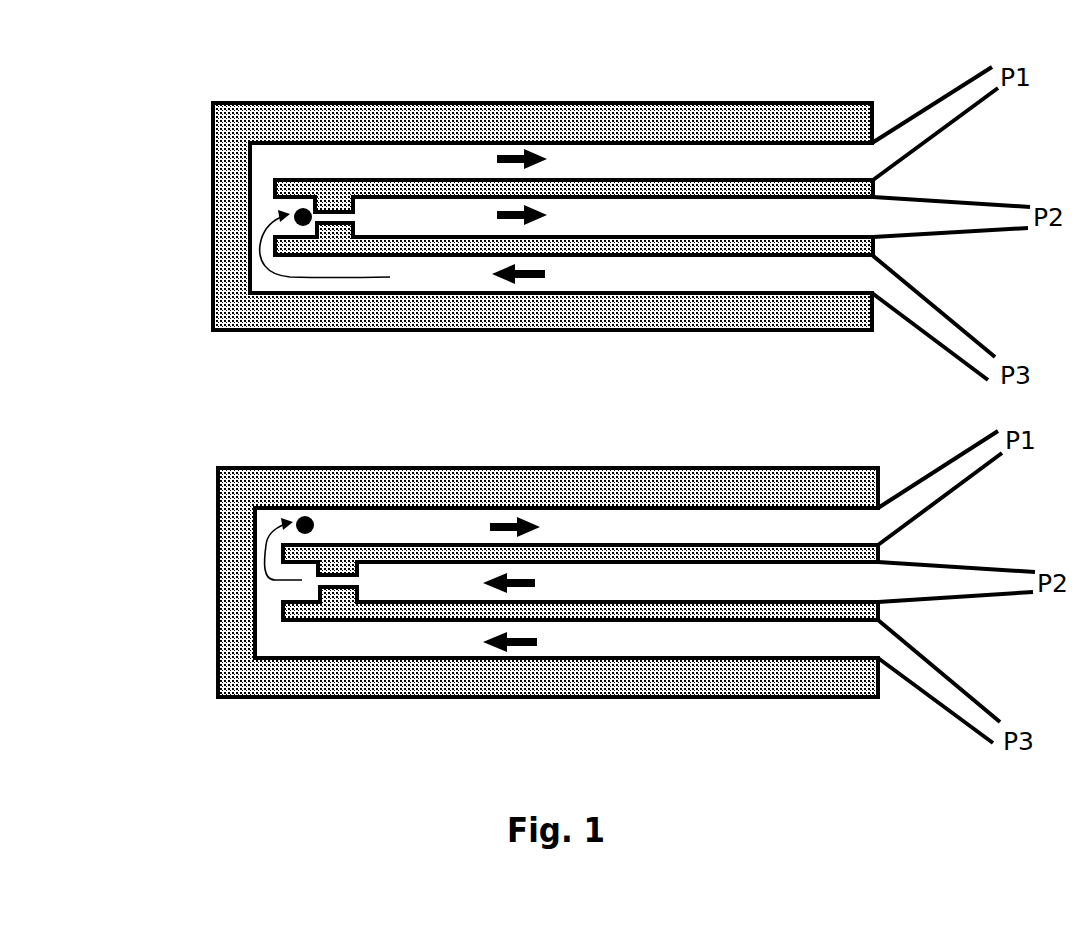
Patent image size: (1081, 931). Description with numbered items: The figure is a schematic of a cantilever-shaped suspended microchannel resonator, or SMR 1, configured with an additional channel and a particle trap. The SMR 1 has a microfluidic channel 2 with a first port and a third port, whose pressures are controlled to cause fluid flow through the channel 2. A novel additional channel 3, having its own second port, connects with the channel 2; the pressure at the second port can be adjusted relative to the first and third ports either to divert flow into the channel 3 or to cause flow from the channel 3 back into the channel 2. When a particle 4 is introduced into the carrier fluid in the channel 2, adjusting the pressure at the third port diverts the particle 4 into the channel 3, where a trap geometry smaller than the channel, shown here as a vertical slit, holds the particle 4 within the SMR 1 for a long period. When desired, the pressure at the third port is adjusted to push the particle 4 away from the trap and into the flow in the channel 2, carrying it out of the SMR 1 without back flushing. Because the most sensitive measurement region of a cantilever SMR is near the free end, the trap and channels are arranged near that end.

The suspended microchannel resonator 1 is at (222, 473).
The microfluidic channel 2 is at (479, 282).
The additional channel 3 is at (650, 218).
The particle 4 is at (305, 516).